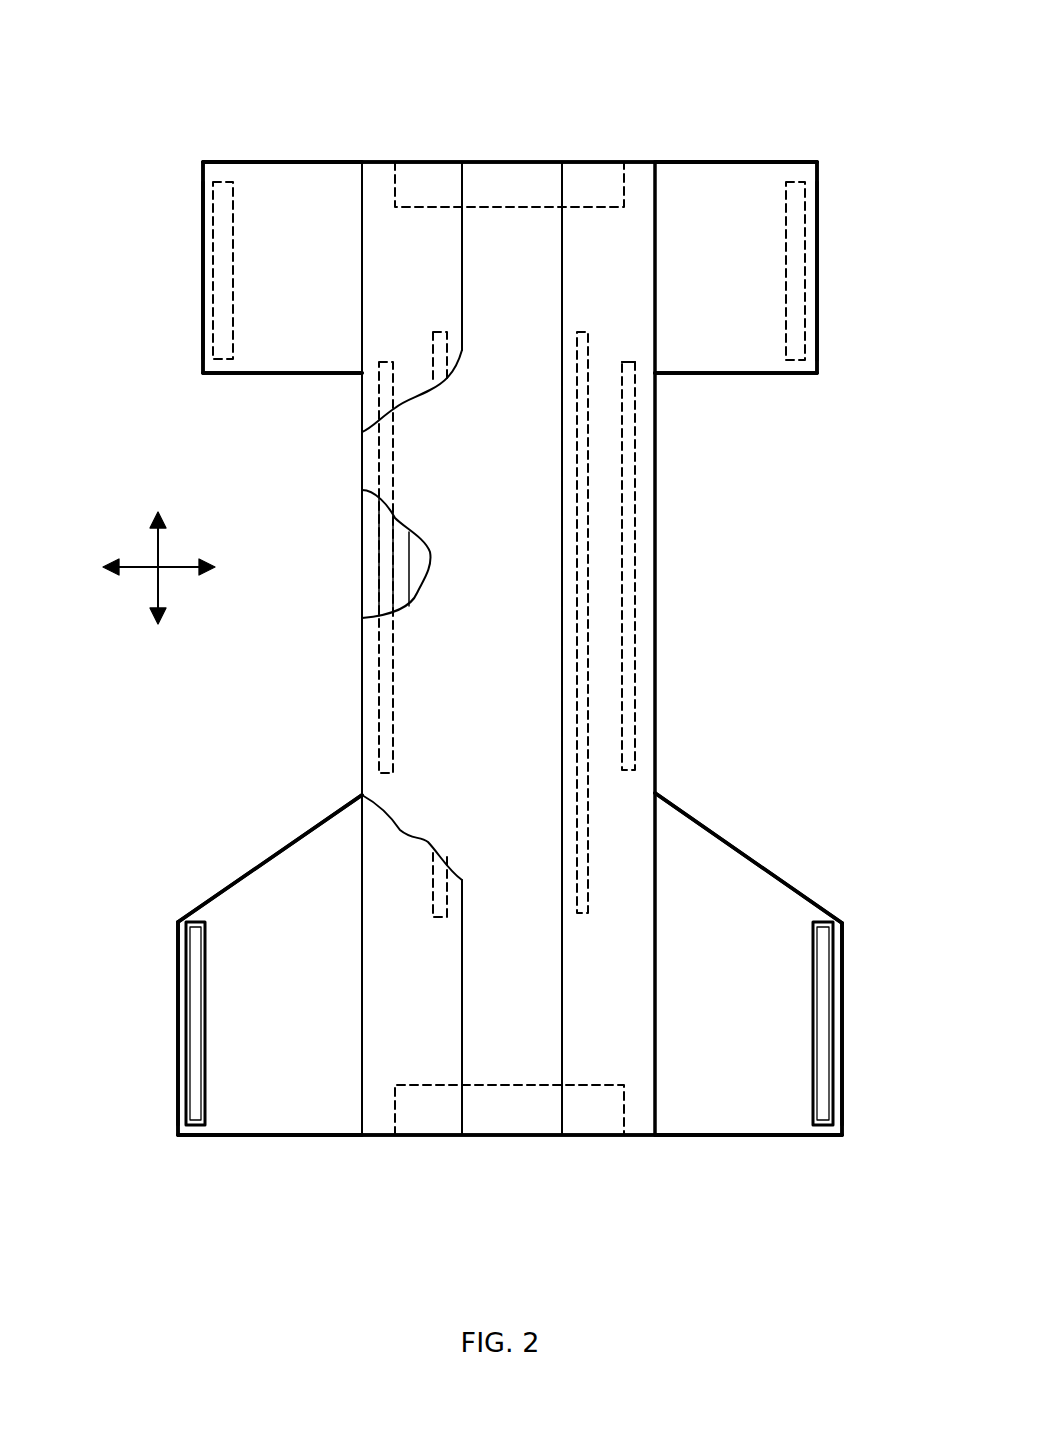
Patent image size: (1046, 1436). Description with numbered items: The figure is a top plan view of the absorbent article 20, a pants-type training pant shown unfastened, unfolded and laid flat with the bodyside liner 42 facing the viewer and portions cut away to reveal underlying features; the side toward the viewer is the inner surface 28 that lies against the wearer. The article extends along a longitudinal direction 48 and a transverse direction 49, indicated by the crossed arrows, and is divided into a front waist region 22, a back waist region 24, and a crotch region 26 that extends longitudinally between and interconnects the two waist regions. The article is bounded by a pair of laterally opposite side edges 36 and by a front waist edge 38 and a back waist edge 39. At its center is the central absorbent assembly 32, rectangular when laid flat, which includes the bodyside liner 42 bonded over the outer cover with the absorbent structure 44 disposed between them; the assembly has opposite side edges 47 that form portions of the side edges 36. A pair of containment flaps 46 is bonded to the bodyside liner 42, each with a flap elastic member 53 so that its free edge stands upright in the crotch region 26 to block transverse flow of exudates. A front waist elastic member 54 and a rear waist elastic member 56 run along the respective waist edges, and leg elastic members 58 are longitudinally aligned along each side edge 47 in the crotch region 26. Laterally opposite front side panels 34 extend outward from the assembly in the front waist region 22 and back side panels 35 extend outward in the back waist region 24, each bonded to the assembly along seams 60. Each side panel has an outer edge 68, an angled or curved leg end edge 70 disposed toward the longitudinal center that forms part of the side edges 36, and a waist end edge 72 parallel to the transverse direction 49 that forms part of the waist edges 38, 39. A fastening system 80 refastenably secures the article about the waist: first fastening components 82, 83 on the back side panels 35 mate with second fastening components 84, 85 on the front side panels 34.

The absorbent article 20 is at (292, 66).
The front waist region 22 is at (676, 392).
The back waist region 24 is at (330, 787).
The crotch region 26 is at (660, 600).
The inner surface 28 is at (496, 486).
The central absorbent assembly 32 is at (362, 658).
The front side panels 34 is at (279, 286).
The back side panels 35 is at (278, 978).
The side edges 36 is at (657, 428).
The front waist edge 38 is at (428, 162).
The back waist edge 39 is at (380, 1135).
The bodyside liner 42 is at (520, 717).
The absorbent structure 44 is at (409, 565).
The containment flaps 46 is at (377, 175).
The side edges of the absorbent assembly 47 is at (362, 455).
The longitudinal direction 48 is at (158, 547).
The transverse direction 49 is at (172, 568).
The flap elastic member 53 is at (440, 336).
The front waist elastic member 54 is at (507, 175).
The rear waist elastic member 56 is at (510, 1110).
The leg elastic members 58 is at (635, 512).
The seams 60 is at (362, 235).
The outer edge 68 is at (818, 182).
The leg end edge 70 is at (263, 373).
The waist end edge 72 is at (258, 162).
The fastening system 80 is at (162, 198).
The first fastening component 82 is at (820, 1005).
The first fastening component 83 is at (192, 955).
The second fastening component 84 is at (797, 232).
The second fastening component 85 is at (223, 262).